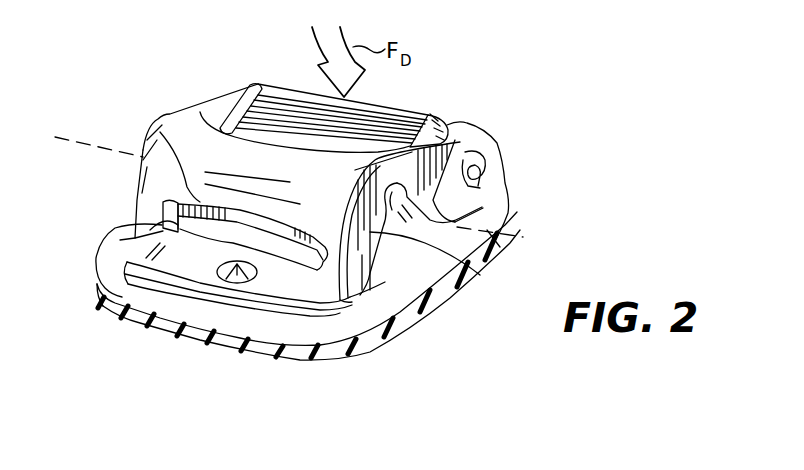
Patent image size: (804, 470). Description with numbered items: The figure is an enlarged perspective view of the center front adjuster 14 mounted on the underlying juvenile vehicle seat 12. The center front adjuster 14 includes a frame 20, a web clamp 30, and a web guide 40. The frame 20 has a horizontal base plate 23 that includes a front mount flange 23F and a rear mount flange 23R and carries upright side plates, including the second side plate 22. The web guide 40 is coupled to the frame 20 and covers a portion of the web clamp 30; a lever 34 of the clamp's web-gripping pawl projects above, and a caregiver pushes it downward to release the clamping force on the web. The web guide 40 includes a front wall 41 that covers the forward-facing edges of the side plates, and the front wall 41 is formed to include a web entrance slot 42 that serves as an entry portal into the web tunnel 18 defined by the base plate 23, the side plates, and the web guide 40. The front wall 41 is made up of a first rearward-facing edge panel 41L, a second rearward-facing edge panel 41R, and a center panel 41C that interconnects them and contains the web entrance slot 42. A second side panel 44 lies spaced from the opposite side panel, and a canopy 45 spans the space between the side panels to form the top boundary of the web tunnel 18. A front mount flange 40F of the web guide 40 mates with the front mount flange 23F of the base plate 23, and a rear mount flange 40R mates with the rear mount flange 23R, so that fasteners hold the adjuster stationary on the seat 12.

The juvenile vehicle seat 12 is at (513, 224).
The center front adjuster 14 is at (128, 117).
The web tunnel 18 is at (245, 233).
The frame 20 is at (400, 257).
The second side plate 22 is at (480, 275).
The horizontal base plate 23 is at (272, 321).
The front mount flange 23F is at (220, 303).
The rear mount flange 23R is at (476, 157).
The web clamp 30 is at (408, 110).
The lever 34 is at (356, 120).
The web guide 40 is at (136, 184).
The front mount flange 40F is at (303, 288).
The rear mount flange 40R is at (478, 190).
The front wall 41 is at (134, 237).
The center panel 41C is at (202, 200).
The first rearward-facing edge panel 41L is at (161, 228).
The second rearward-facing edge panel 41R is at (318, 237).
The web entrance slot 42 is at (235, 203).
The second side panel 44 is at (348, 278).
The canopy 45 is at (260, 158).